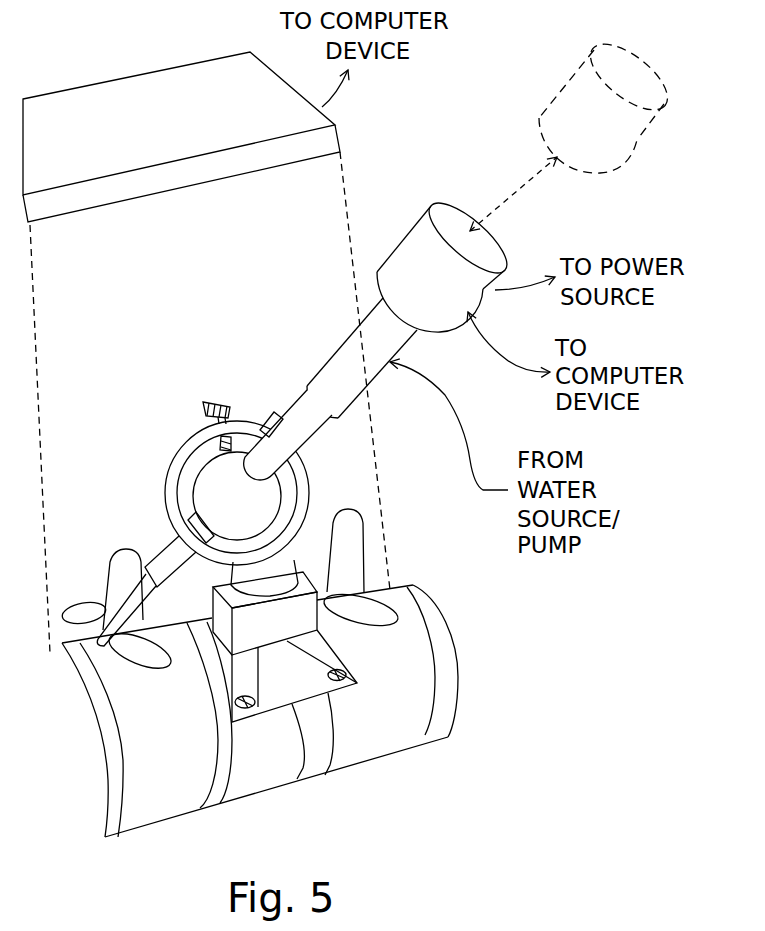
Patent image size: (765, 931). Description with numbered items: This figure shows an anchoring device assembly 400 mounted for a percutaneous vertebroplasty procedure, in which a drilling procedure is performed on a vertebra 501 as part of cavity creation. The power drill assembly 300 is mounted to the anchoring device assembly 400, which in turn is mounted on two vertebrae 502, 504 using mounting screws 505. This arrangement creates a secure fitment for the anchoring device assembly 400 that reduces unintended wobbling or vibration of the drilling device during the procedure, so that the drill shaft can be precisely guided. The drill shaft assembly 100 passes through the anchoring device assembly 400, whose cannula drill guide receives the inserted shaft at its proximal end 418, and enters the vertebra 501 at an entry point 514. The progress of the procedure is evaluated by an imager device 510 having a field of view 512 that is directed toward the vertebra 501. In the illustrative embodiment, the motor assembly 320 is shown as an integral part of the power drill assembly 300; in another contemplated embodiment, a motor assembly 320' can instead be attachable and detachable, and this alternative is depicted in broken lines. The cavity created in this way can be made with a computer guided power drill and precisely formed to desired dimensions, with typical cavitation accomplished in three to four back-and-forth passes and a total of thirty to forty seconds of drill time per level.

The drill shaft assembly 100 is at (121, 597).
The power drill assembly 300 is at (398, 240).
The motor assembly 320 is at (488, 220).
The motor assembly 320' is at (633, 102).
The anchoring device assembly 400 is at (245, 397).
The proximal end 418 is at (362, 433).
The vertebra 501 is at (160, 793).
The vertebra 502 is at (235, 773).
The vertebra 504 is at (400, 733).
The mounting screws 505 is at (336, 682).
The imager device 510 is at (181, 137).
The field of view 512 is at (210, 402).
The entry point 514 is at (101, 657).